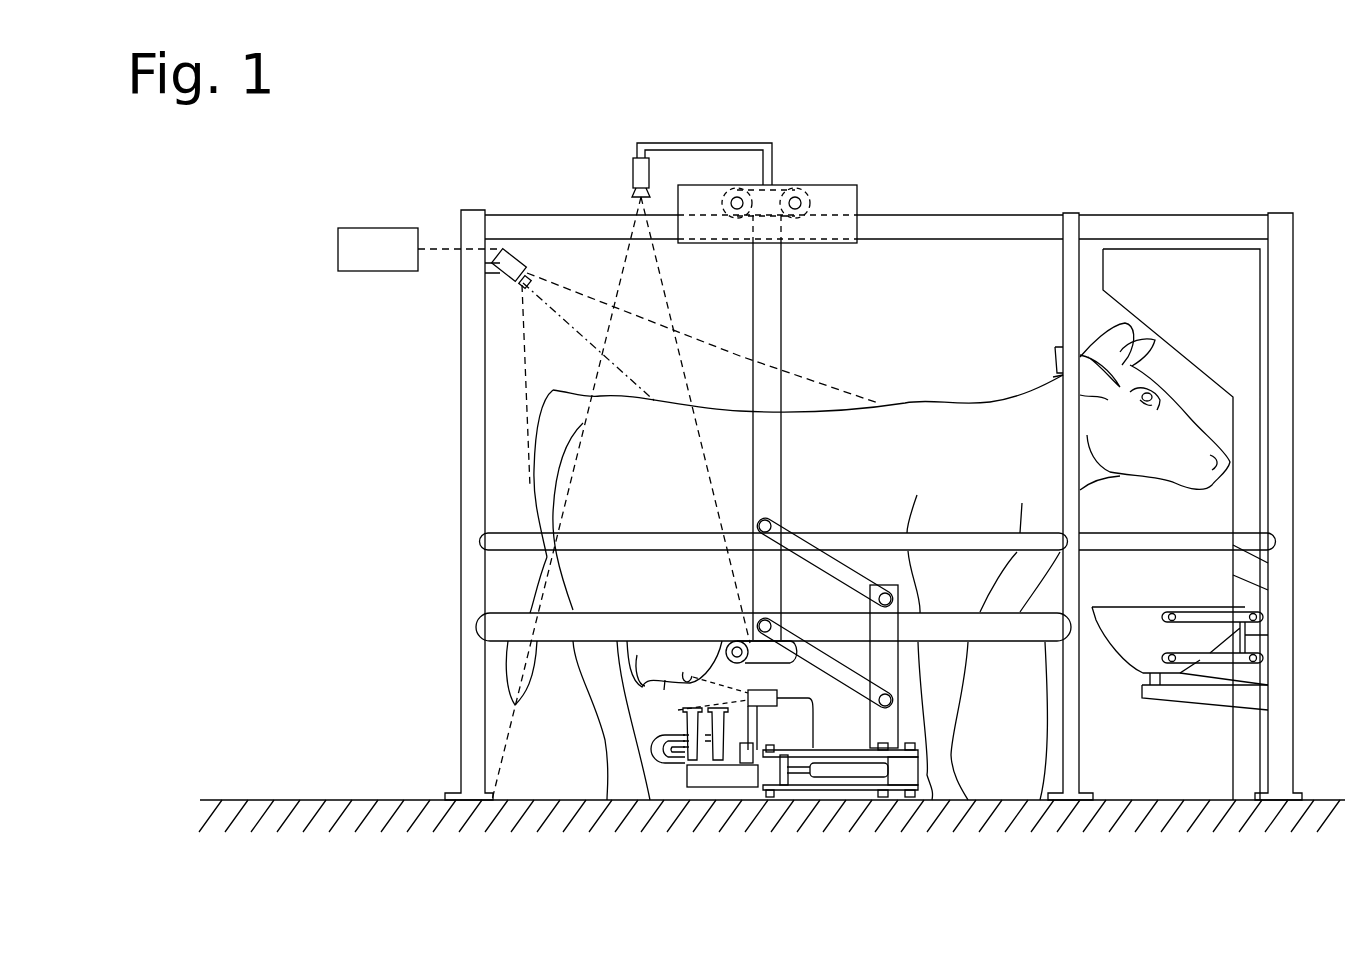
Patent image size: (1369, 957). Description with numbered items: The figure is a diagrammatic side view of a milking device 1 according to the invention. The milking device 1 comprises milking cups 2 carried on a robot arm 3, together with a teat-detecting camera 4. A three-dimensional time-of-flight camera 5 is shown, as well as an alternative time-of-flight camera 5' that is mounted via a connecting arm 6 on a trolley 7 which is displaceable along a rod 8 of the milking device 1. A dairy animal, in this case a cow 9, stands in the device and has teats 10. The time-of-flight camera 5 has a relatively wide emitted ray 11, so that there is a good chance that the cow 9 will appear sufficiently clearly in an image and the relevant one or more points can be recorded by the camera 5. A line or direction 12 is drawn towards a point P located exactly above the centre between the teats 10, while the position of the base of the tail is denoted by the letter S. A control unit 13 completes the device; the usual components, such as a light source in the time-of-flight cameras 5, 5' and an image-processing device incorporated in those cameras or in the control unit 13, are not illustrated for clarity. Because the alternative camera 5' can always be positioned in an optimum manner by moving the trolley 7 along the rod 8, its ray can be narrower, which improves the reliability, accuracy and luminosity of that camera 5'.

The milking device 1 is at (1018, 175).
The milking cups 2 is at (690, 728).
The robot arm 3 is at (885, 675).
The teat-detecting camera 4 is at (775, 698).
The 3D time-of-flight camera 5 is at (508, 318).
The alternative 3D time-of-flight camera 5' is at (621, 459).
The connecting arm 6 is at (698, 147).
The trolley 7 is at (822, 200).
The rod 8 is at (890, 227).
The dairy animal 9 is at (940, 435).
The teats 10 is at (693, 677).
The emitted ray 11 is at (636, 265).
The line or direction towards point P 12 is at (583, 332).
The control unit 13 is at (365, 252).
The point above the centre between the teats P is at (658, 405).
The base of the tail S is at (600, 408).